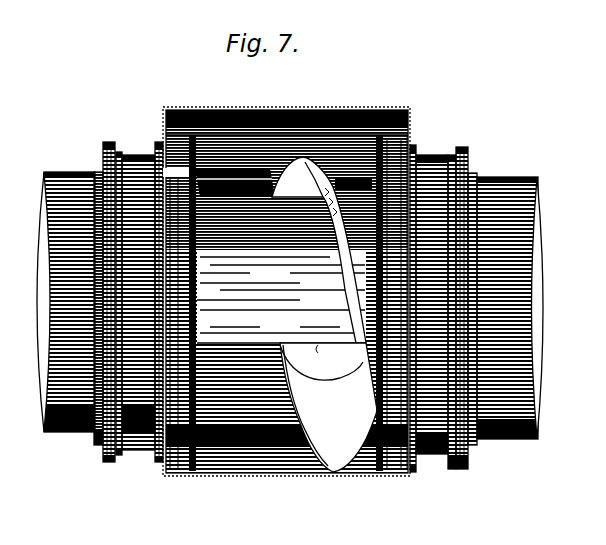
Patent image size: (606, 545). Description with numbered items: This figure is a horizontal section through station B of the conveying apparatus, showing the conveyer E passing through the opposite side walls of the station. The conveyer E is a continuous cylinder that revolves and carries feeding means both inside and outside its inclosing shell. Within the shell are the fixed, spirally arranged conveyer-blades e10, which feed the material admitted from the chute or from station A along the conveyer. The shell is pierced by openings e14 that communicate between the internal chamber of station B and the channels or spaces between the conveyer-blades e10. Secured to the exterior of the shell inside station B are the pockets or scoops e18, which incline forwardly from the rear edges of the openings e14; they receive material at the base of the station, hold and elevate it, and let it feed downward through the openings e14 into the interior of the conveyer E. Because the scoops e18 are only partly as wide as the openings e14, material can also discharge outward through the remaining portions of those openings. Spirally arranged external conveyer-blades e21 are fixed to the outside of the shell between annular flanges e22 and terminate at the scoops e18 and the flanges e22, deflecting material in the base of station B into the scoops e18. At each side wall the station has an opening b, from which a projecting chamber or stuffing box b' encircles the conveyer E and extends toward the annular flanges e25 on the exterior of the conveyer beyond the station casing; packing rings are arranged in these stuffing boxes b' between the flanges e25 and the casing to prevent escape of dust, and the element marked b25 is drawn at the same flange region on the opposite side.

The conveyer-blades e10 is at (324, 314).
The openings e14 is at (360, 210).
The pockets or scoops e18 is at (252, 160).
The external conveyer-blades e21 is at (322, 176).
The annular flanges e22 is at (163, 125).
The annular flanges e25 is at (108, 148).
The station B is at (318, 108).
The conveyer E is at (507, 176).
The opening b is at (437, 323).
The projecting chamber or stuffing box b' is at (304, 311).
The ring b25 is at (466, 150).